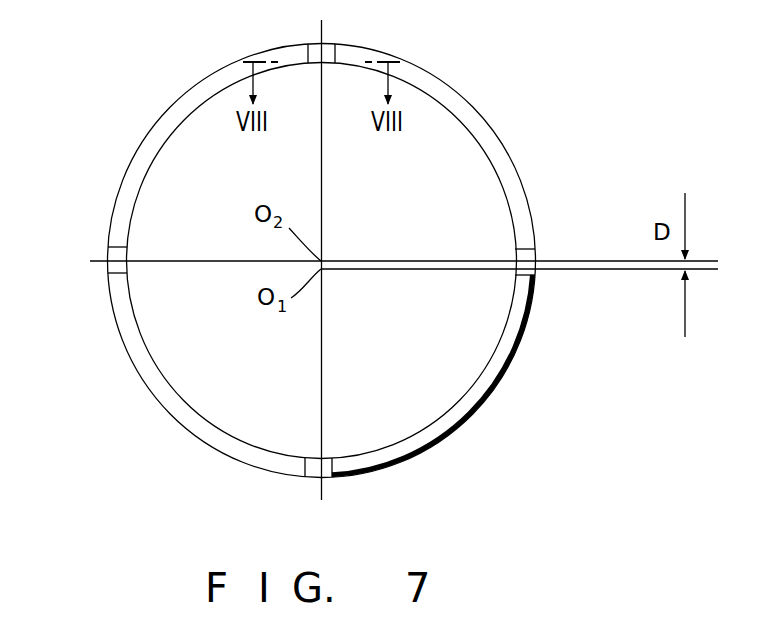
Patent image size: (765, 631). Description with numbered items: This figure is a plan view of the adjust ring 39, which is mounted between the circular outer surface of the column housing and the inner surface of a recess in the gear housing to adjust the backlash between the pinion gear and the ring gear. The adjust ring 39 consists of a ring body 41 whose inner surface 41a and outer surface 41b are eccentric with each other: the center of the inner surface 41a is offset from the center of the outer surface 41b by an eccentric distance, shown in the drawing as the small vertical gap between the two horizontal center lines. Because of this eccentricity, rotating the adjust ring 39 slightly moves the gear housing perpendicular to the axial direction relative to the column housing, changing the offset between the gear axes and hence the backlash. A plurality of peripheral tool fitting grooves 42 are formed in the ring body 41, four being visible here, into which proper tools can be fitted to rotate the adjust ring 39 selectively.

The adjust ring 39 is at (518, 154).
The ring body 41 is at (448, 97).
The inner surface 41a is at (470, 383).
The outer surface 41b is at (452, 435).
The tool fitting grooves 42 is at (328, 49).